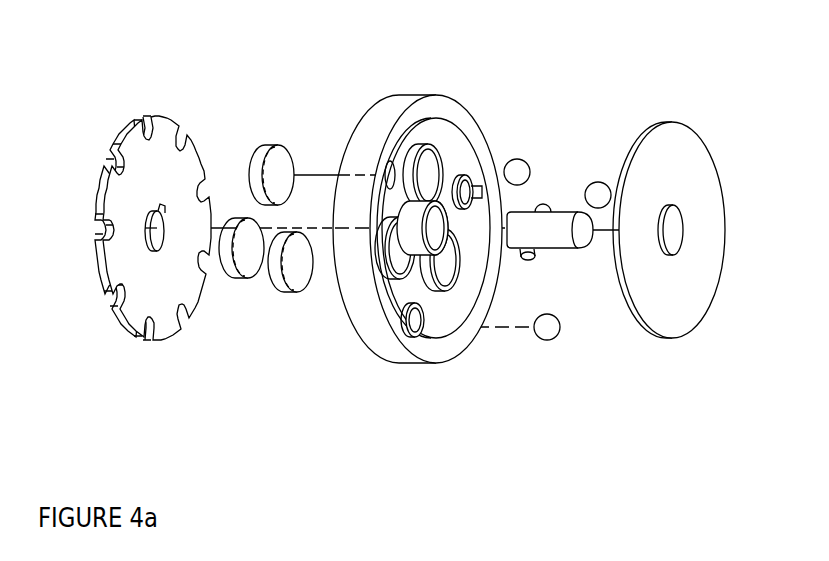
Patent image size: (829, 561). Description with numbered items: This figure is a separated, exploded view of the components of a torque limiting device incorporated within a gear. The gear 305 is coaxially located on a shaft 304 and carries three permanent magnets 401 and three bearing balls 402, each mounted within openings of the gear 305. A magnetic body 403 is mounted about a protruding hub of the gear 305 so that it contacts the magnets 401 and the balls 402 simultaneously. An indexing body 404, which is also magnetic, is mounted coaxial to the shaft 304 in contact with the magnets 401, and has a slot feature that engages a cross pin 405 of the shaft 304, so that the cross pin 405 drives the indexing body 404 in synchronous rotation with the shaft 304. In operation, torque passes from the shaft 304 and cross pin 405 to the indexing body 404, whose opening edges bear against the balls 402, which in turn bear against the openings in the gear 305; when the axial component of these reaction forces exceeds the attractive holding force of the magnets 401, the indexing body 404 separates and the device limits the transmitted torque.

The shaft 304 is at (574, 199).
The gear 305 is at (435, 351).
The permanent magnets 401 is at (276, 157).
The bearing balls 402 is at (547, 333).
The magnetic body 403 is at (670, 318).
The indexing body 404 is at (165, 320).
The cross pin 405 is at (542, 195).